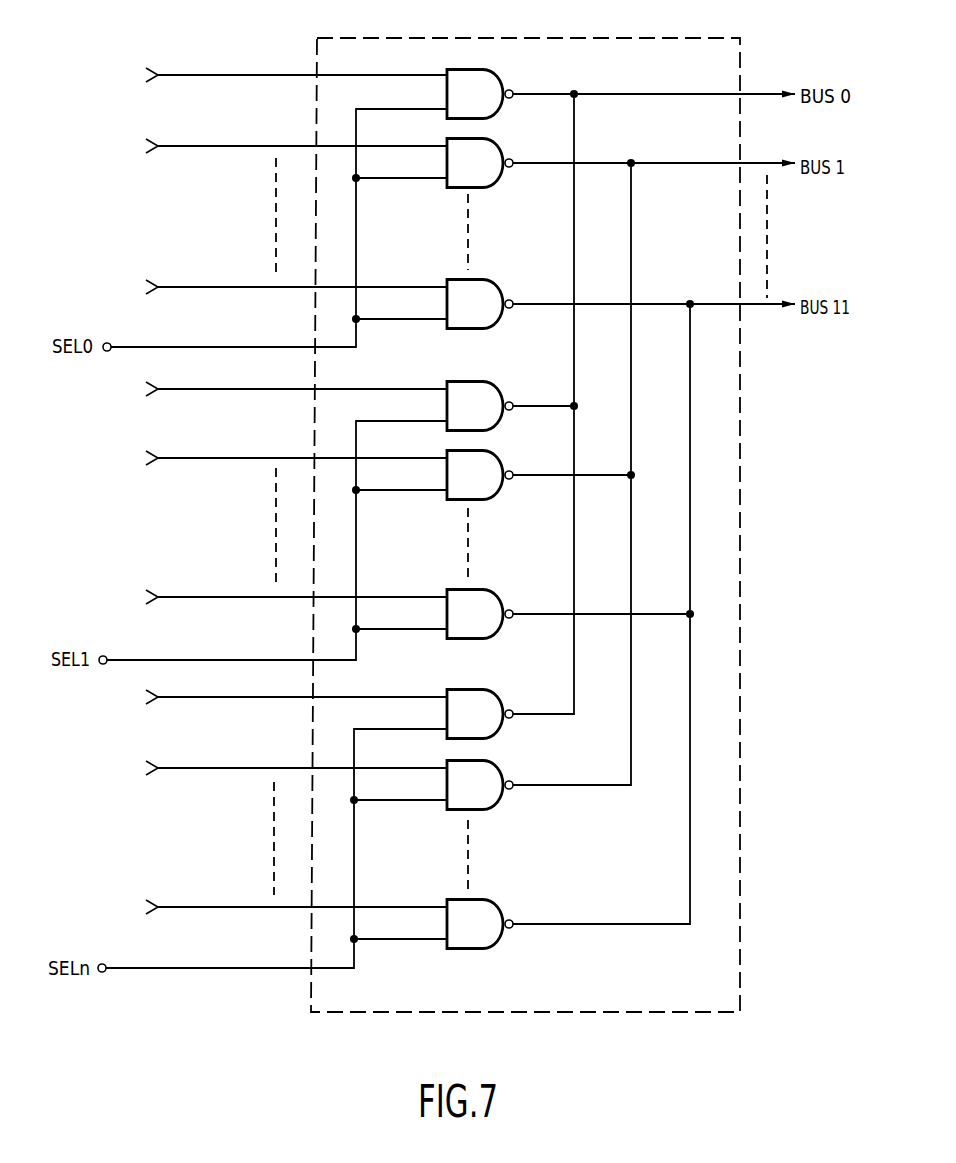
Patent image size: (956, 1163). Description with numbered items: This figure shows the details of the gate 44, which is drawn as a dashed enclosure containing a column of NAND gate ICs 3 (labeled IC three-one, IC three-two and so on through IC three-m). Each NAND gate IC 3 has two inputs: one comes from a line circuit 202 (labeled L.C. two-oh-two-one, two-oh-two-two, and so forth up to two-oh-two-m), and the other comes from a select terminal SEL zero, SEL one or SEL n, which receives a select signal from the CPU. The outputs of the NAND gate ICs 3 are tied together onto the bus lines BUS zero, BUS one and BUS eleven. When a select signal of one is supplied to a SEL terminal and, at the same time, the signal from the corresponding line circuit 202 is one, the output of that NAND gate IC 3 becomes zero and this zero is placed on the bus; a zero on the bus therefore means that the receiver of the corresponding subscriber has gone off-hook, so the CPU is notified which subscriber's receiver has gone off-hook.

The gate 44 is at (545, 38).
The NAND gate IC 3 is at (501, 503).
The line circuit 202 is at (247, 479).